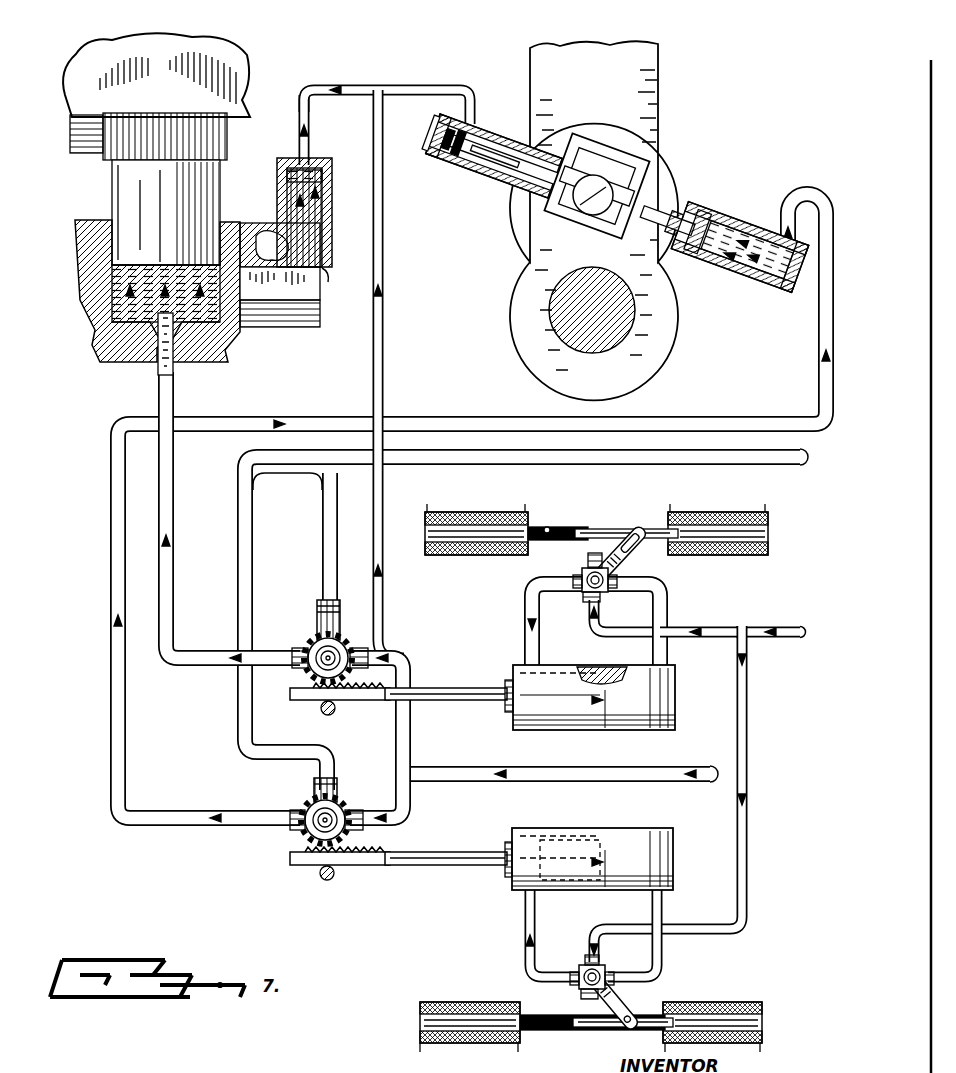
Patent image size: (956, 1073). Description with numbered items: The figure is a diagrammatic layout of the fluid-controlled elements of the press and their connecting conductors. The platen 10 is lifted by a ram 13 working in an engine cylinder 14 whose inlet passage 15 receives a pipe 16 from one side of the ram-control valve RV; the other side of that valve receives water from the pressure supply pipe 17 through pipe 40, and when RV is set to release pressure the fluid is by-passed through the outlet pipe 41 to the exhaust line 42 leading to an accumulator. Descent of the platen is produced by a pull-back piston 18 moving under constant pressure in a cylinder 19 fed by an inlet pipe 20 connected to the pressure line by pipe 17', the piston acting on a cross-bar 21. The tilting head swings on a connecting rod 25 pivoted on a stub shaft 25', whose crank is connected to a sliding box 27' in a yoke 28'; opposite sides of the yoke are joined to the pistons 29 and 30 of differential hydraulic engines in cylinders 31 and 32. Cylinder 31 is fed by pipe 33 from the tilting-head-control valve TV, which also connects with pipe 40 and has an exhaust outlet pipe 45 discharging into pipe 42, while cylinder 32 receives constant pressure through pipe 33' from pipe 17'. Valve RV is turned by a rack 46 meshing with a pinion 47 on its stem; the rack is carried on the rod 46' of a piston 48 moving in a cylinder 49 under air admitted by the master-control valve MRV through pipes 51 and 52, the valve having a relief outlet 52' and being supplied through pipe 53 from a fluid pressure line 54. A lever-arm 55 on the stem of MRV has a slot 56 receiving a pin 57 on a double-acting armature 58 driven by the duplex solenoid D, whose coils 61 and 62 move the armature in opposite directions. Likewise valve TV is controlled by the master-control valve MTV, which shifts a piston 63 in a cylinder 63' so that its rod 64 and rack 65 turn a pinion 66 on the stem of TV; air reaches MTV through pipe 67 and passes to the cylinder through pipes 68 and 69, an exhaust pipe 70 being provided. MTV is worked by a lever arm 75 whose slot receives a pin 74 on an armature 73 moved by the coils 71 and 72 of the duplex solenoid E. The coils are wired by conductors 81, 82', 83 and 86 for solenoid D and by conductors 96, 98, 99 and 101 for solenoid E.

The platen 10 is at (228, 82).
The ram 13 is at (130, 192).
The engine cylinder 14 is at (84, 350).
The inlet passage 15 is at (150, 360).
The pipe 16 is at (175, 570).
The pressure supply pipe 17 is at (561, 761).
The pipe 17' is at (400, 374).
The pull-back piston 18 is at (322, 197).
The cylinder 19 is at (326, 280).
The inlet pipe 20 is at (300, 129).
The cross-bar 21 is at (310, 328).
The connecting rod 25 is at (606, 205).
The stub shaft 25' is at (619, 333).
The sliding box 27' is at (593, 149).
The yoke 28' is at (625, 179).
The piston 29 is at (712, 210).
The piston 30 is at (470, 172).
The cylinder 31 is at (752, 224).
The cylinder 32 is at (516, 133).
The pipe 33 is at (446, 508).
The pipe 33' is at (387, 89).
The pipe 40 is at (411, 726).
The outlet pipe 41 is at (322, 548).
The exhaust line 42 is at (438, 432).
The exhaust outlet pipe 45 is at (238, 744).
The rack 46 is at (340, 713).
The rod 46' is at (446, 676).
The pinion 47 is at (298, 616).
The piston 48 is at (590, 696).
The cylinder 49 is at (590, 668).
The pipe 51 is at (667, 656).
The pipe 52 is at (544, 625).
The relief outlet 52' is at (631, 567).
The pipe 53 is at (694, 626).
The fluid pressure line 54 is at (770, 628).
The lever-arm 55 is at (545, 548).
The slot 56 is at (556, 526).
The pin 57 is at (545, 525).
The double-acting armature 58 is at (605, 529).
The coil 61 is at (718, 512).
The coil 62 is at (470, 512).
The piston 63 is at (589, 844).
The cylinder 63' is at (570, 839).
The rod 64 is at (440, 868).
The rack 65 is at (366, 866).
The pinion 66 is at (300, 838).
The pipe 67 is at (748, 872).
The pipe 68 is at (523, 925).
The pipe 69 is at (665, 966).
The exhaust pipe 70 is at (603, 994).
The coil 71 is at (442, 1002).
The coil 72 is at (730, 998).
The armature 73 is at (573, 1031).
The pin 74 is at (546, 1030).
The lever arm 75 is at (548, 1000).
The conductor 81 is at (670, 504).
The conductor 82' is at (789, 510).
The conductor 83 is at (427, 504).
The conductor 86 is at (525, 504).
The conductor 96 is at (420, 1052).
The conductor 98 is at (518, 1052).
The conductor 99 is at (665, 1052).
The conductor 101 is at (760, 1052).
The ram-control valve RV is at (320, 639).
The tilting-head-control valve TV is at (297, 819).
The master-control valve MRV is at (572, 552).
The master-control valve MTV is at (579, 1000).
The duplex solenoid D is at (606, 516).
The duplex solenoid E is at (598, 1019).